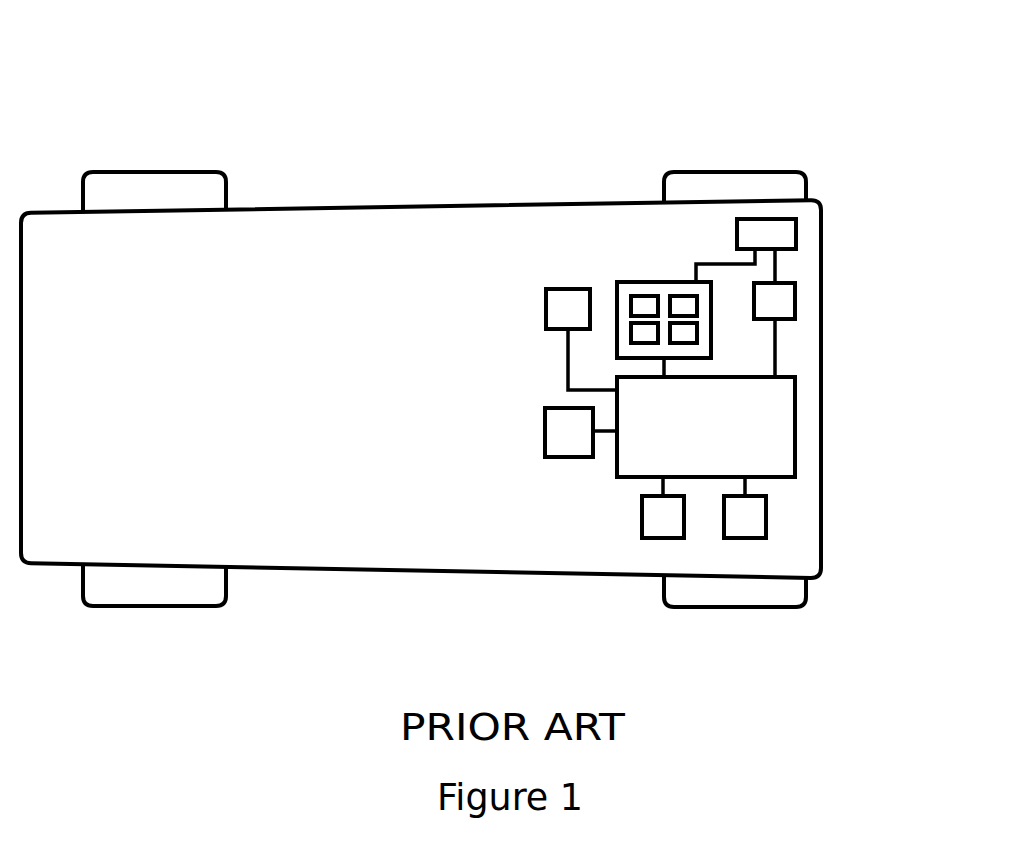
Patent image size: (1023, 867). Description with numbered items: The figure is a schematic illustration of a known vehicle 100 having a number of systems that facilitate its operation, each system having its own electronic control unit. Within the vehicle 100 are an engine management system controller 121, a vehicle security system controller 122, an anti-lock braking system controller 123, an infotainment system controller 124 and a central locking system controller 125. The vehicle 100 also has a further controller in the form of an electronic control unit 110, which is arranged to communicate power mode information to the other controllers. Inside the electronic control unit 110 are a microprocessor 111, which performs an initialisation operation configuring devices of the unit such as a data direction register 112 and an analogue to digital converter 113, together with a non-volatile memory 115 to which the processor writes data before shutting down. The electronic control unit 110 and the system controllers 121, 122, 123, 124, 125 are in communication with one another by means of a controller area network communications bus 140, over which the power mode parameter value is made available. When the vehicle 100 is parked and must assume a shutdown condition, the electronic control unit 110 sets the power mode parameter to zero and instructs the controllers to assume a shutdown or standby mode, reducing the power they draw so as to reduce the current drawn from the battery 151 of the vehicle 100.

The vehicle 100 is at (920, 112).
The electronic control unit 110 is at (664, 282).
The microprocessor 111 is at (643, 297).
The data direction register 112 is at (684, 296).
The analogue to digital converter 113 is at (700, 333).
The non-volatile memory 115 is at (630, 333).
The engine management system controller 121 is at (796, 300).
The vehicle security system controller 122 is at (765, 518).
The anti-lock braking system controller 123 is at (663, 538).
The infotainment system controller 124 is at (567, 440).
The central locking system controller 125 is at (565, 303).
The controller area network communications bus 140 is at (795, 427).
The battery 151 is at (796, 233).